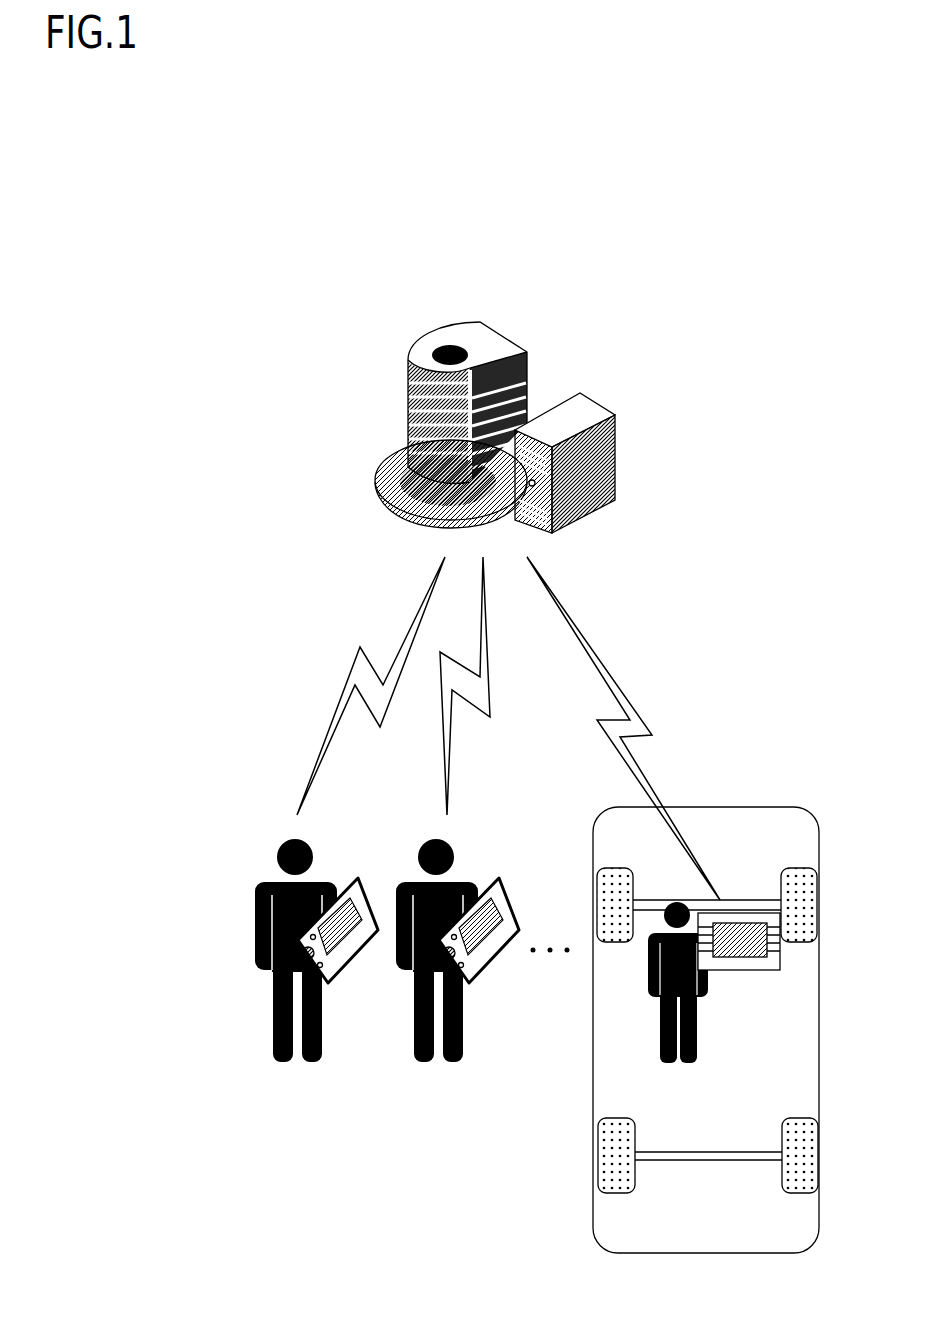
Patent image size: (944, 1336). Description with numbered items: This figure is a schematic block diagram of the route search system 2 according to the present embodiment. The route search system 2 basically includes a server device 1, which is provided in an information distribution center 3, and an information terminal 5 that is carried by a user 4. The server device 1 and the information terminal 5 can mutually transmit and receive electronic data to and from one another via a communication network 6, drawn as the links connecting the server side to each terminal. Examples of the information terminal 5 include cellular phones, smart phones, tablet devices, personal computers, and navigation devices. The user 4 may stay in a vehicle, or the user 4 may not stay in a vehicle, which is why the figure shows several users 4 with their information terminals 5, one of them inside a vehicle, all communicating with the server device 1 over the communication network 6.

The server device 1 is at (580, 423).
The route search system 2 is at (735, 558).
The information distribution center 3 is at (450, 347).
The user 4 is at (303, 1062).
The information terminal 5 is at (340, 962).
The communication network 6 is at (403, 631).